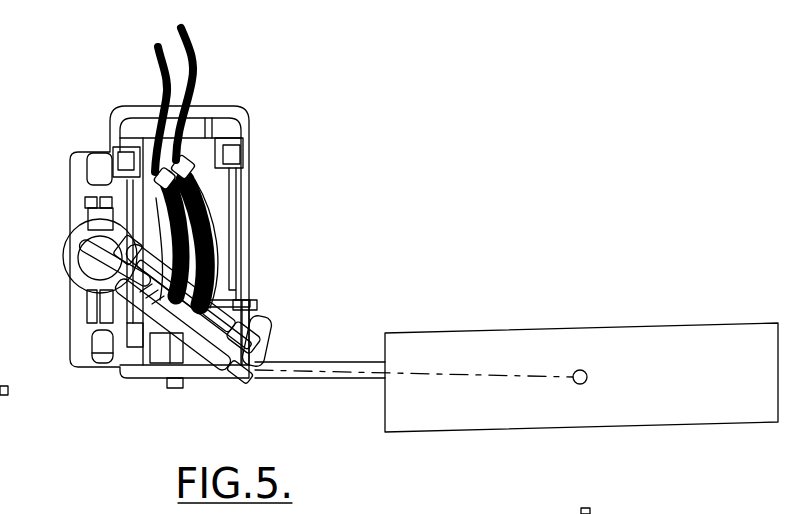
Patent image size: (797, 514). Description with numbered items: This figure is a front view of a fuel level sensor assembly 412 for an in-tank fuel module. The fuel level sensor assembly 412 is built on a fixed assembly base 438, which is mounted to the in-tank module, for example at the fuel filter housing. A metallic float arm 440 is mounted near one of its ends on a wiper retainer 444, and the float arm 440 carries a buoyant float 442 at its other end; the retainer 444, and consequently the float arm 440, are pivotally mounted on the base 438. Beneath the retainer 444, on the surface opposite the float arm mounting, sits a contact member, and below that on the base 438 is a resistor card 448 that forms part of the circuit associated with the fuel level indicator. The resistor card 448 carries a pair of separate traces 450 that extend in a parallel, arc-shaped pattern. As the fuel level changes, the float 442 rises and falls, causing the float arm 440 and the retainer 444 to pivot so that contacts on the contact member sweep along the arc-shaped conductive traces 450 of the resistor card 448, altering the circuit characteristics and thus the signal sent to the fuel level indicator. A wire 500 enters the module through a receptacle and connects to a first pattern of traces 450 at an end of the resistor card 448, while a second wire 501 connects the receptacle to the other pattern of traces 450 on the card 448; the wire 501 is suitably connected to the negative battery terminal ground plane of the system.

The fuel level sensor assembly 412 is at (272, 134).
The fixed assembly base 438 is at (253, 263).
The float arm 440 is at (308, 362).
The float 442 is at (587, 333).
The wiper retainer 444 is at (220, 303).
The resistor card 448 is at (236, 186).
The traces 450 is at (215, 232).
The wire 500 is at (200, 62).
The second wire 501 is at (160, 64).